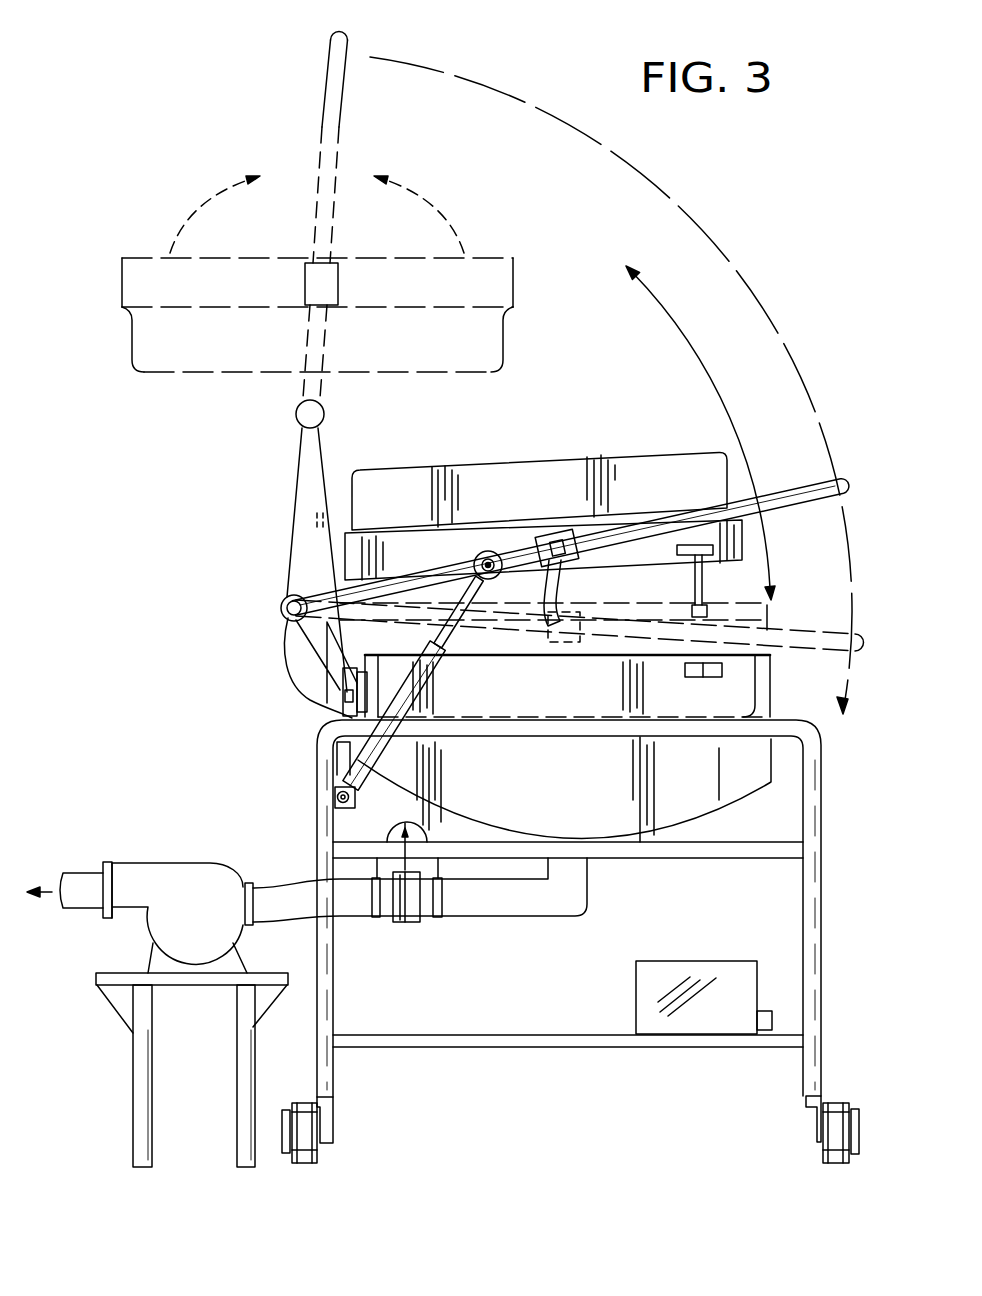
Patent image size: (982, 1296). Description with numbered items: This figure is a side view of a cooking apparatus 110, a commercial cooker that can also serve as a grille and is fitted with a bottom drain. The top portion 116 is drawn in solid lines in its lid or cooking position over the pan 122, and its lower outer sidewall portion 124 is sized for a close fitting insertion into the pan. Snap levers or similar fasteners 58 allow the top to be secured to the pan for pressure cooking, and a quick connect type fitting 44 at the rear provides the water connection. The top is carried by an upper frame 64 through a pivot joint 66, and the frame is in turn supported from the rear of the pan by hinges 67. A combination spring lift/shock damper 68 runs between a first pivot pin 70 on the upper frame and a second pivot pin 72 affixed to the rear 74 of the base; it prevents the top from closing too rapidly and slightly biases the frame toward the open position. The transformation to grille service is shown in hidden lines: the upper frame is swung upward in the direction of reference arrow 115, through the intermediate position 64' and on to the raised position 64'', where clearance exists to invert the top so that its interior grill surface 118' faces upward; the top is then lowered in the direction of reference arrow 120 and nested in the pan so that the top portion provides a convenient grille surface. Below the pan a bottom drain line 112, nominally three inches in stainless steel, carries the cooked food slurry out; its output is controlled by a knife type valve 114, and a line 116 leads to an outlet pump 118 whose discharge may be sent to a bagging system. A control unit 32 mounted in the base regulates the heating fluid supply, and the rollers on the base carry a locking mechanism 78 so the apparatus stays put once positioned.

The control unit 32 is at (650, 960).
The quick connect type fitting 44 is at (340, 697).
The snap levers or similar fasteners 58 is at (694, 587).
The upper frame 64 is at (607, 625).
The upper frame intermediate position 64' is at (570, 547).
The upper frame raised position 64'' is at (300, 362).
The pivot joint 66 is at (547, 536).
The hinges 67 is at (282, 613).
The combination spring lift/shock damper 68 is at (432, 662).
The first pivot pin 70 is at (475, 562).
The second pivot pin 72 is at (335, 797).
The rear of base 74 is at (802, 912).
The locking mechanism 78 is at (320, 1162).
The cooking apparatus 110 is at (166, 688).
The bottom drain line 112 is at (508, 916).
The knife type valve 114 is at (407, 925).
The reference arrow 115 is at (687, 345).
The top portion 116 is at (548, 467).
The outlet pump 118 is at (384, 843).
The interior grill surface 118' is at (446, 512).
The reference arrow 120 is at (797, 365).
The pan 122 is at (577, 804).
The lower outer sidewall portion 124 is at (352, 497).